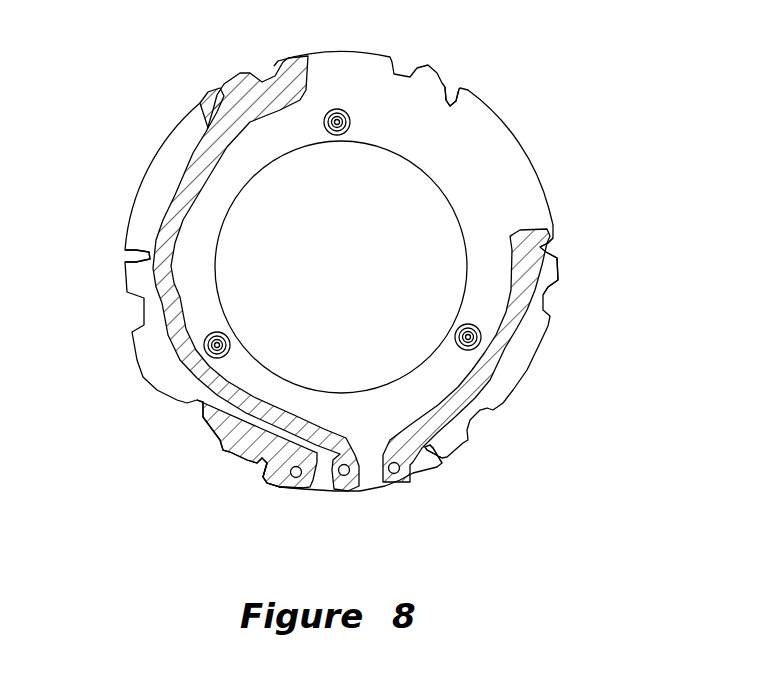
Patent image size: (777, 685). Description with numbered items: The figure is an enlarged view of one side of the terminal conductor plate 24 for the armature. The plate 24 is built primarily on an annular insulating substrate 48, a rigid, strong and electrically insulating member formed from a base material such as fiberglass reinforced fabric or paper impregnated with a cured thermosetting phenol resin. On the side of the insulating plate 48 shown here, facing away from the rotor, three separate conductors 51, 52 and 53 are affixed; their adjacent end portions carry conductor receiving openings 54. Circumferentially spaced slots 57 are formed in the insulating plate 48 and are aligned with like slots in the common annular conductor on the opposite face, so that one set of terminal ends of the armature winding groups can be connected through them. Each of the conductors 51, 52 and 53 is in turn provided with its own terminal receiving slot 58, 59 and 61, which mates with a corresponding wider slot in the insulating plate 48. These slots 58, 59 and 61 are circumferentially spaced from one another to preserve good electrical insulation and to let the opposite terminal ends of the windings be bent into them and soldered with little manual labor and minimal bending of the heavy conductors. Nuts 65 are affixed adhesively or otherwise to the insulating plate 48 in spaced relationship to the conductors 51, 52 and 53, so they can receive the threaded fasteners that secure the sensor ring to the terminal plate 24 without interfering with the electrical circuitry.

The terminal conductor plate 24 is at (364, 285).
The annular insulating substrate 48 is at (536, 152).
The conductor 51 is at (497, 380).
The conductor 52 is at (166, 186).
The conductor 53 is at (190, 402).
The conductor receiving openings 54 is at (393, 476).
The slots 57 is at (456, 92).
The terminal receiving slot 58 is at (541, 247).
The terminal receiving slot 59 is at (222, 98).
The terminal receiving slot 61 is at (261, 461).
The nuts 65 is at (347, 110).